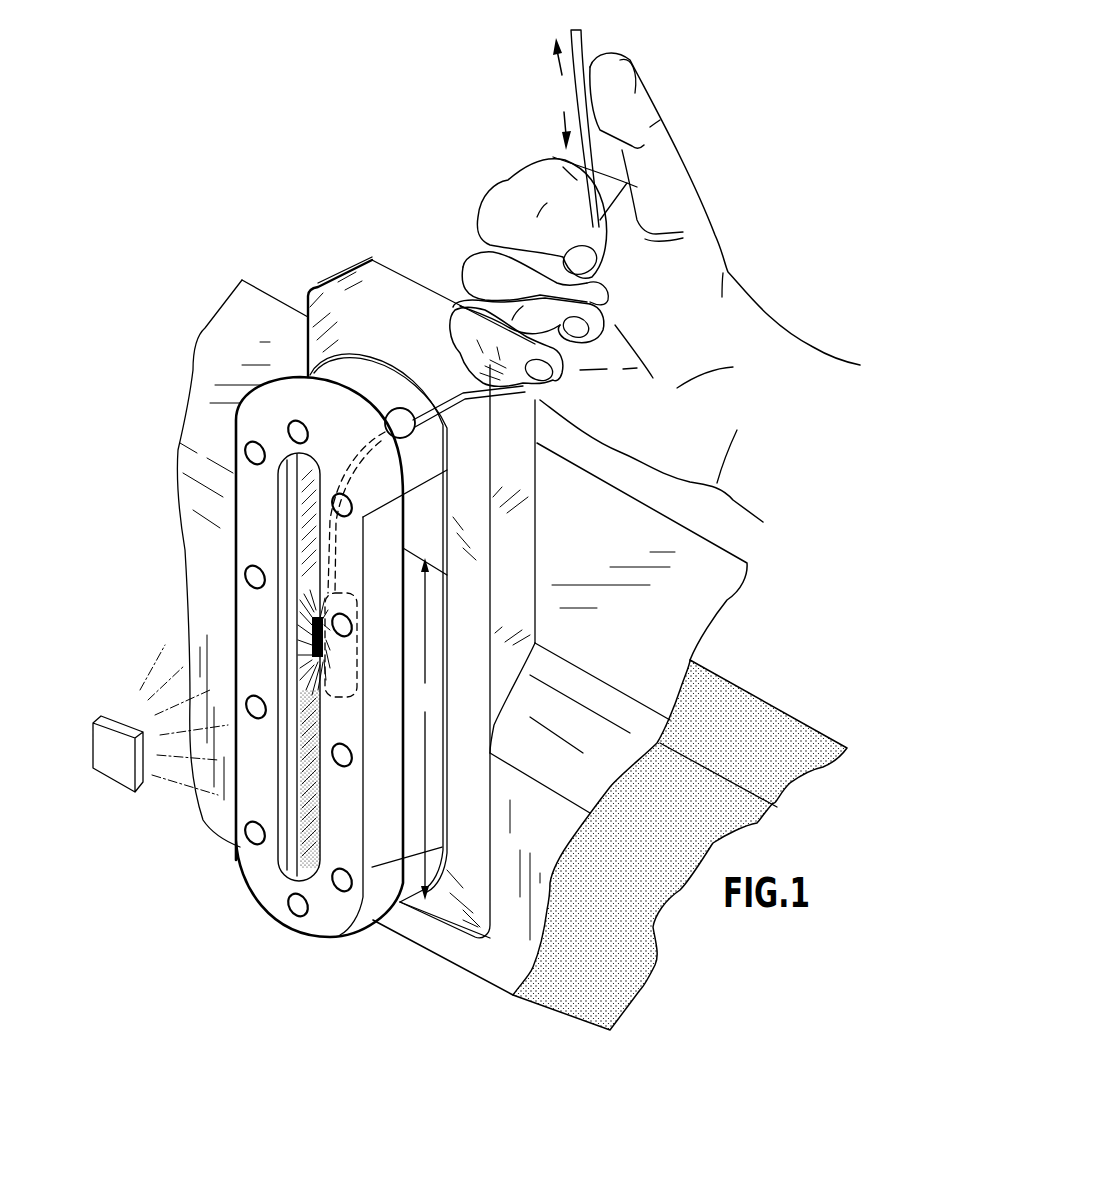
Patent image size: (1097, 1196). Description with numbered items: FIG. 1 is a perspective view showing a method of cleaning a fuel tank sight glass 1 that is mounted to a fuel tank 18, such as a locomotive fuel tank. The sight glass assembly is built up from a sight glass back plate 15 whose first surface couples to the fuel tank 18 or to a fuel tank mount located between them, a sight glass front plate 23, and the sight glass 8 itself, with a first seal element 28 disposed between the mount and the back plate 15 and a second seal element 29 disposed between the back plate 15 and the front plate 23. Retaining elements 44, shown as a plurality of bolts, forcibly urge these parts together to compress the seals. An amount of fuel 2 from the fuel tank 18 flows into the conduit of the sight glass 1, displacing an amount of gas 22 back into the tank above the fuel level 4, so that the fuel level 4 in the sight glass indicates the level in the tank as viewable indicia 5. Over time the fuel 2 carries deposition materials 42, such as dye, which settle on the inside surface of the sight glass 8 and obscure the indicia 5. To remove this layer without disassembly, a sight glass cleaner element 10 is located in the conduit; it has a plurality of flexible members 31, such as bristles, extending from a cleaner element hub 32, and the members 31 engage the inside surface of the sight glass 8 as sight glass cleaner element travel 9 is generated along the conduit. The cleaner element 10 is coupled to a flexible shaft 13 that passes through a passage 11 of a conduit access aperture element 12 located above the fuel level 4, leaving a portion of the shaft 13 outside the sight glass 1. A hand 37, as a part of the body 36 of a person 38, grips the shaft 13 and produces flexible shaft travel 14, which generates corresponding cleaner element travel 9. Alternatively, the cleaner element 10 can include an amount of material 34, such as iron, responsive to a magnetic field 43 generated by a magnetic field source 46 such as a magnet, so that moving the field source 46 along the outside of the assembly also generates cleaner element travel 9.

The fuel tank sight glass 1 is at (294, 283).
The amount of fuel 2 is at (732, 810).
The fuel level 4 is at (773, 727).
The viewable indicia 5 is at (303, 517).
The sight glass 8 is at (313, 797).
The sight glass cleaner element travel 9 is at (425, 729).
The sight glass cleaner element 10 is at (327, 612).
The passage 11 is at (400, 408).
The conduit access aperture element 12 is at (392, 405).
The flexible shaft 13 is at (588, 43).
The flexible shaft travel 14 is at (563, 94).
The sight glass back plate 15 is at (342, 368).
The fuel tank 18 is at (697, 600).
The amount of gas 22 is at (307, 477).
The sight glass front plate 23 is at (290, 392).
The first seal element 28 is at (425, 380).
The second seal element 29 is at (292, 392).
The plurality of flexible members 31 is at (323, 640).
The cleaner element hub 32 is at (330, 667).
The amount of material responsive to the magnetic field 34 is at (320, 605).
The body 36 is at (818, 348).
The hand 37 is at (512, 175).
The person 38 is at (827, 420).
The deposition materials 42 is at (598, 980).
The magnetic field 43 is at (157, 782).
The retaining elements 44 is at (347, 880).
The magnetic field source 46 is at (103, 740).